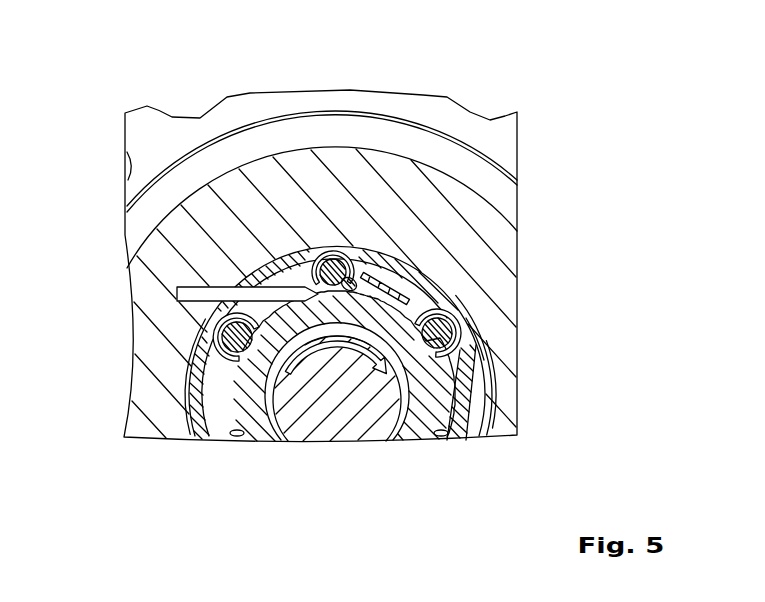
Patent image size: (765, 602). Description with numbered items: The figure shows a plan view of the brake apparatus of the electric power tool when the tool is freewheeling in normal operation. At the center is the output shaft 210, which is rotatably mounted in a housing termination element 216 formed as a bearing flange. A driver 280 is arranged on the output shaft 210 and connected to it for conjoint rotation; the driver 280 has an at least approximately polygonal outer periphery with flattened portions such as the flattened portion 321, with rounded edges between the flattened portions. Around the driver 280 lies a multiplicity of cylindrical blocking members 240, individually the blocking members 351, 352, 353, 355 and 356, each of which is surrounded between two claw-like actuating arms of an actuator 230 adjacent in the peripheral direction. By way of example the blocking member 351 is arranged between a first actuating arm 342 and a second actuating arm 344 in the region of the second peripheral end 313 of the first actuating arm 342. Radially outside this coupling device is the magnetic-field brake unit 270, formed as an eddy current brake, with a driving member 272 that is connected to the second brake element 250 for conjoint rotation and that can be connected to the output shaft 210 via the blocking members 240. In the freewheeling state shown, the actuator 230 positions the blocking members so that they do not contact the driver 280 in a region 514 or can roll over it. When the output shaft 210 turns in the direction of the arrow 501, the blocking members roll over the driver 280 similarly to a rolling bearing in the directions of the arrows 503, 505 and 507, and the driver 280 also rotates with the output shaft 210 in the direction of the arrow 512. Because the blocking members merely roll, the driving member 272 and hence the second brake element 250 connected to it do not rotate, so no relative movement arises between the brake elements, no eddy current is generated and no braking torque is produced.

The output shaft 210 is at (315, 417).
The housing termination element 216 is at (422, 106).
The actuator 230 is at (480, 383).
The blocking members 240 is at (470, 370).
The second brake element 250 is at (456, 214).
The magnetic-field brake unit 270 is at (452, 285).
The driving member 272 is at (450, 345).
The driver 280 is at (397, 407).
The second peripheral end 313 is at (366, 262).
The flattened portion 321 is at (385, 262).
The first actuating arm 342 is at (289, 258).
The second actuating arm 344 is at (452, 300).
The blocking member 351 is at (468, 133).
The blocking member 352 is at (466, 400).
The blocking member 353 is at (440, 440).
The blocking member 355 is at (237, 437).
The blocking member 356 is at (230, 357).
The arrow 501 is at (340, 345).
The arrow 503 is at (217, 340).
The arrow 505 is at (338, 260).
The arrow 507 is at (458, 318).
The arrow 512 is at (445, 252).
The region 514 is at (187, 292).